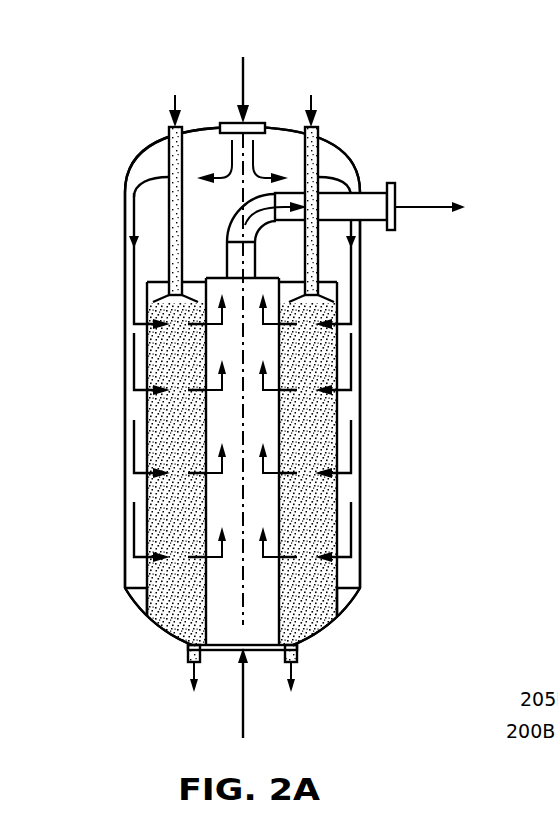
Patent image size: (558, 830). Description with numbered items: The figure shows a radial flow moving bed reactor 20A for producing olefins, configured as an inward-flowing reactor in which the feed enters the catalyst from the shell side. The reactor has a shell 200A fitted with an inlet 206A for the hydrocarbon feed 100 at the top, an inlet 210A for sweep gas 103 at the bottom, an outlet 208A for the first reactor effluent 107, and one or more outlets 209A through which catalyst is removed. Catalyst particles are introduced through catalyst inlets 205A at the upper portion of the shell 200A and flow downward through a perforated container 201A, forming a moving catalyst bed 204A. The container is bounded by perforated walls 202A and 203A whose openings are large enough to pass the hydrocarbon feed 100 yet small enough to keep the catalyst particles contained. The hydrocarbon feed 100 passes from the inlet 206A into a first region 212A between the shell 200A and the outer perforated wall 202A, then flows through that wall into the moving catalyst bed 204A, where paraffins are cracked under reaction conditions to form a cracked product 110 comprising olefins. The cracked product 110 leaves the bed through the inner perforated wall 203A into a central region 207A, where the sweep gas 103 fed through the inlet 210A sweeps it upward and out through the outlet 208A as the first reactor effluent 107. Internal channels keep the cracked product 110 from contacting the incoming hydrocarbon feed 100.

The radial flow moving bed reactor 20A is at (363, 40).
The hydrocarbon feed 100 is at (252, 32).
The sweep gas 103 is at (300, 746).
The first reactor effluent 107 is at (417, 209).
The cracked product 110 is at (221, 391).
The shell 200A is at (133, 180).
The perforated container 201A is at (149, 282).
The perforated wall 202A is at (163, 341).
The perforated wall 203A is at (207, 368).
The moving catalyst bed 204A is at (153, 612).
The catalyst inlets 205A is at (168, 129).
The inlet 206A is at (268, 127).
The region 207A is at (313, 607).
The outlet 208A is at (376, 192).
The outlets 209A is at (188, 656).
The inlet 210A is at (262, 651).
The first region 212A is at (346, 409).